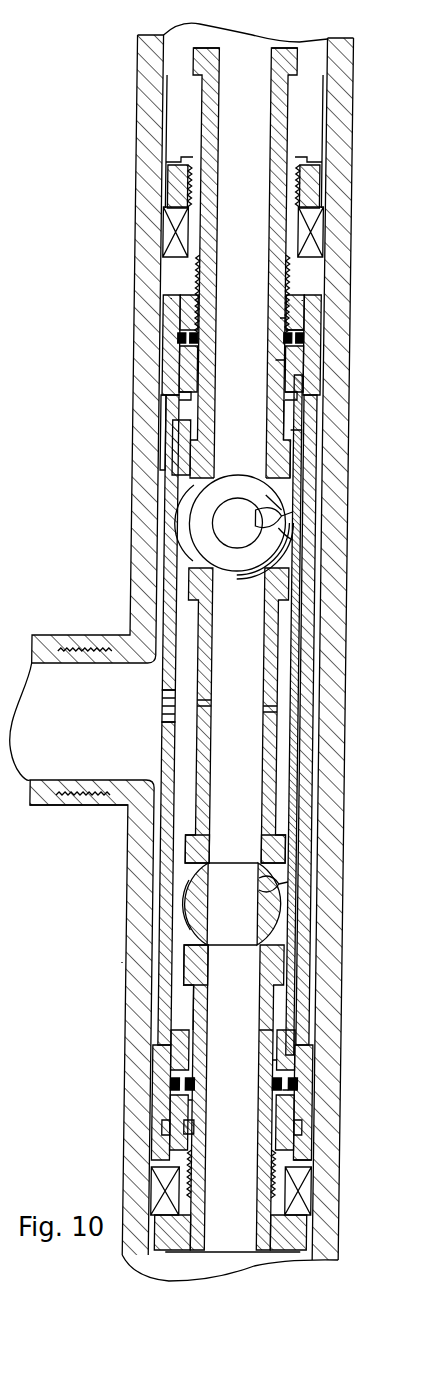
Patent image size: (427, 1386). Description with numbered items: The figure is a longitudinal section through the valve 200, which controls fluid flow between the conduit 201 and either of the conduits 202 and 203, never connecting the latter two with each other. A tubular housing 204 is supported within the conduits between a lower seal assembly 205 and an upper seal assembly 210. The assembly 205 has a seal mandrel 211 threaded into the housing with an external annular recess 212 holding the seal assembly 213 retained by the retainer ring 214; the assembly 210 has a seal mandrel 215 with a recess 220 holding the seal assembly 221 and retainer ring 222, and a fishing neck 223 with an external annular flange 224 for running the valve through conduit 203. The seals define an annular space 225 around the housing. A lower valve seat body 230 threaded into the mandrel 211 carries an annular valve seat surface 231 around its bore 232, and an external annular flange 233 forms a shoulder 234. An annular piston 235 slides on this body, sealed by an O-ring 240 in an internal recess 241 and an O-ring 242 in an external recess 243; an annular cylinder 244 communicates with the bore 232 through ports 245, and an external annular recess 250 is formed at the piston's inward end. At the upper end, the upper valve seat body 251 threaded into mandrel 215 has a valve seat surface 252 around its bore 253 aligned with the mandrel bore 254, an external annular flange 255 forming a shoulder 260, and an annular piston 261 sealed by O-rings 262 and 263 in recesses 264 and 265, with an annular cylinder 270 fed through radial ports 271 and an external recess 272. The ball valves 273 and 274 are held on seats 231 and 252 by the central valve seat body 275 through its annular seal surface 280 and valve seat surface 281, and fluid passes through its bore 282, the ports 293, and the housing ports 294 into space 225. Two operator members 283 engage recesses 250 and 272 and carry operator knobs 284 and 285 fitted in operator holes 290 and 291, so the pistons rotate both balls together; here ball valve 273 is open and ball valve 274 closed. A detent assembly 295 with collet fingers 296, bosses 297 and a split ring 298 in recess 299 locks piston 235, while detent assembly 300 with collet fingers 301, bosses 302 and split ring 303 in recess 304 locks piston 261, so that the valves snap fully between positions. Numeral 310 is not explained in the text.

The valve 200 is at (122, 962).
The conduit 201 is at (50, 802).
The conduit 202 is at (345, 70).
The conduit 203 is at (320, 1245).
The tubular housing 204 is at (325, 955).
The seal assembly 205 is at (306, 1168).
The seal assembly 210 is at (325, 190).
The seal mandrel 211 is at (290, 1228).
The external annular recess 212 is at (165, 1190).
The seal assembly 213 is at (305, 1190).
The retainer ring 214 is at (300, 1265).
The seal mandrel 215 is at (298, 158).
The external annular recess 220 is at (318, 232).
The seal assembly 221 is at (172, 232).
The retainer ring 222 is at (180, 178).
The fishing neck 223 is at (178, 128).
The external annular flange 224 is at (190, 62).
The annular space 225 is at (164, 420).
The lower valve seat body 230 is at (170, 1145).
The annular valve seat surface 231 is at (198, 928).
The bore 232 is at (270, 1038).
The external annular flange 233 is at (194, 950).
The annular shoulder 234 is at (196, 992).
The annular piston 235 is at (300, 1056).
The O-ring 240 is at (290, 1085).
The internal annular recess 241 is at (288, 1062).
The O-ring 242 is at (296, 1080).
The external annular recess 243 is at (182, 1083).
The annular cylinder 244 is at (300, 1103).
The ports 245 is at (231, 1173).
The external annular recess 250 is at (185, 1042).
The upper valve seat body 251 is at (292, 420).
The annular valve seat surface 252 is at (194, 500).
The bore 253 is at (286, 418).
The bore 254 is at (268, 110).
The external annular flange 255 is at (305, 438).
The shoulder 260 is at (183, 450).
The annular piston 261 is at (310, 360).
The O-ring seal 262 is at (300, 339).
The O-ring seal 263 is at (300, 338).
The annular recess 264 is at (286, 392).
The annular recess 265 is at (182, 362).
The annular cylinder 270 is at (182, 305).
The retainer 271 is at (284, 368).
The external annular recess 272 is at (183, 390).
The ball valve 273 is at (304, 910).
The ball valve 274 is at (292, 546).
The central valve seat body 275 is at (308, 760).
The annular seal surface 280 is at (192, 856).
The annular valve seat surface 281 is at (206, 556).
The bore 282 is at (264, 832).
The operator members 283 is at (298, 605).
The operator knob 284 is at (268, 884).
The operator knob 285 is at (258, 514).
The operator hole 290 is at (270, 904).
The operator hole 291 is at (237, 523).
The ports 293 is at (266, 716).
The ports 294 is at (168, 706).
The detent assembly 295 is at (178, 1128).
The collet fingers 296 is at (182, 1105).
The boss 297 is at (196, 1112).
The split ring 298 is at (200, 1130).
The external annular recess 299 is at (300, 1132).
The detent assembly 300 is at (178, 298).
The collet fingers 301 is at (183, 330).
The bosses 302 is at (284, 292).
The split ring 303 is at (286, 312).
The external recess 304 is at (288, 328).
The link pin 310 is at (280, 500).